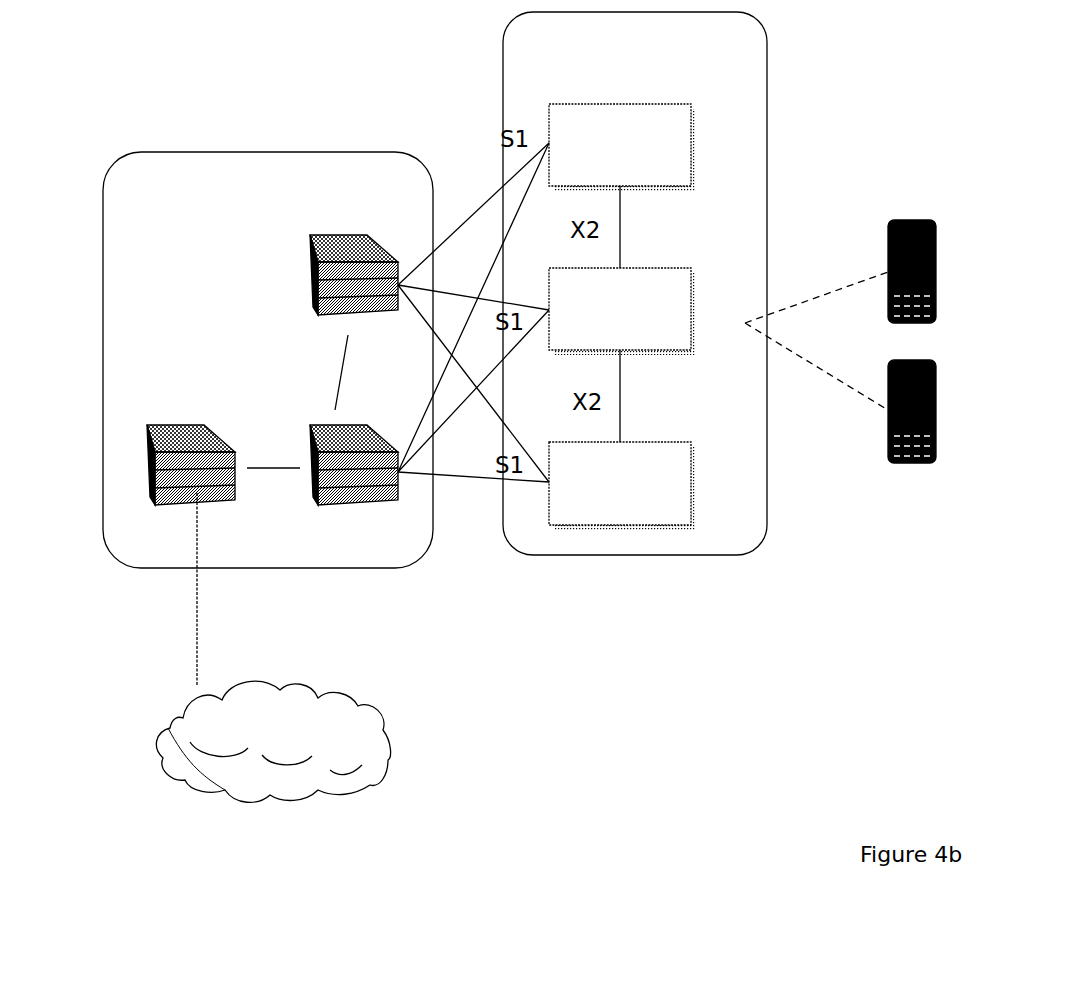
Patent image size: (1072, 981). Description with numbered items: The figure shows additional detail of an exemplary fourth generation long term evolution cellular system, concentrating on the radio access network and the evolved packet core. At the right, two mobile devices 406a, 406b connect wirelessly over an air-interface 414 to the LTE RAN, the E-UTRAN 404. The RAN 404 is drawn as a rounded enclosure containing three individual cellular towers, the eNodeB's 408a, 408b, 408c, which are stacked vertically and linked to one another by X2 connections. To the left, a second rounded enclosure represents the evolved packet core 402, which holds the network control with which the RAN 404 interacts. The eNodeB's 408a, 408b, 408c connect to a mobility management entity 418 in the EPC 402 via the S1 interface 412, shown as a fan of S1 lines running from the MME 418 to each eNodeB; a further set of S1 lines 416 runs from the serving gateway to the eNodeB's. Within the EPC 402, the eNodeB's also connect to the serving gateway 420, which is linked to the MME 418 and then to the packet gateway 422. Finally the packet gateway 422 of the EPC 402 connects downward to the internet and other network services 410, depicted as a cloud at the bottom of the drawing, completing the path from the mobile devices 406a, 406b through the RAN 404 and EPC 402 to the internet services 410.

The evolved packet core 402 is at (278, 150).
The LTE RAN (E-UTRAN) 404 is at (593, 555).
The mobile device 406a is at (913, 222).
The mobile device 406b is at (935, 363).
The eNodeB 408a is at (612, 97).
The eNodeB 408b is at (647, 266).
The eNodeB 408c is at (657, 440).
The internet services 410 is at (248, 687).
The S1 interface 412 is at (473, 312).
The air-interface 414 is at (812, 365).
The S1 interface links from S-GW 416 is at (479, 312).
The mobility management entity 418 is at (340, 230).
The serving gateway 420 is at (350, 423).
The packet gateway 422 is at (180, 423).